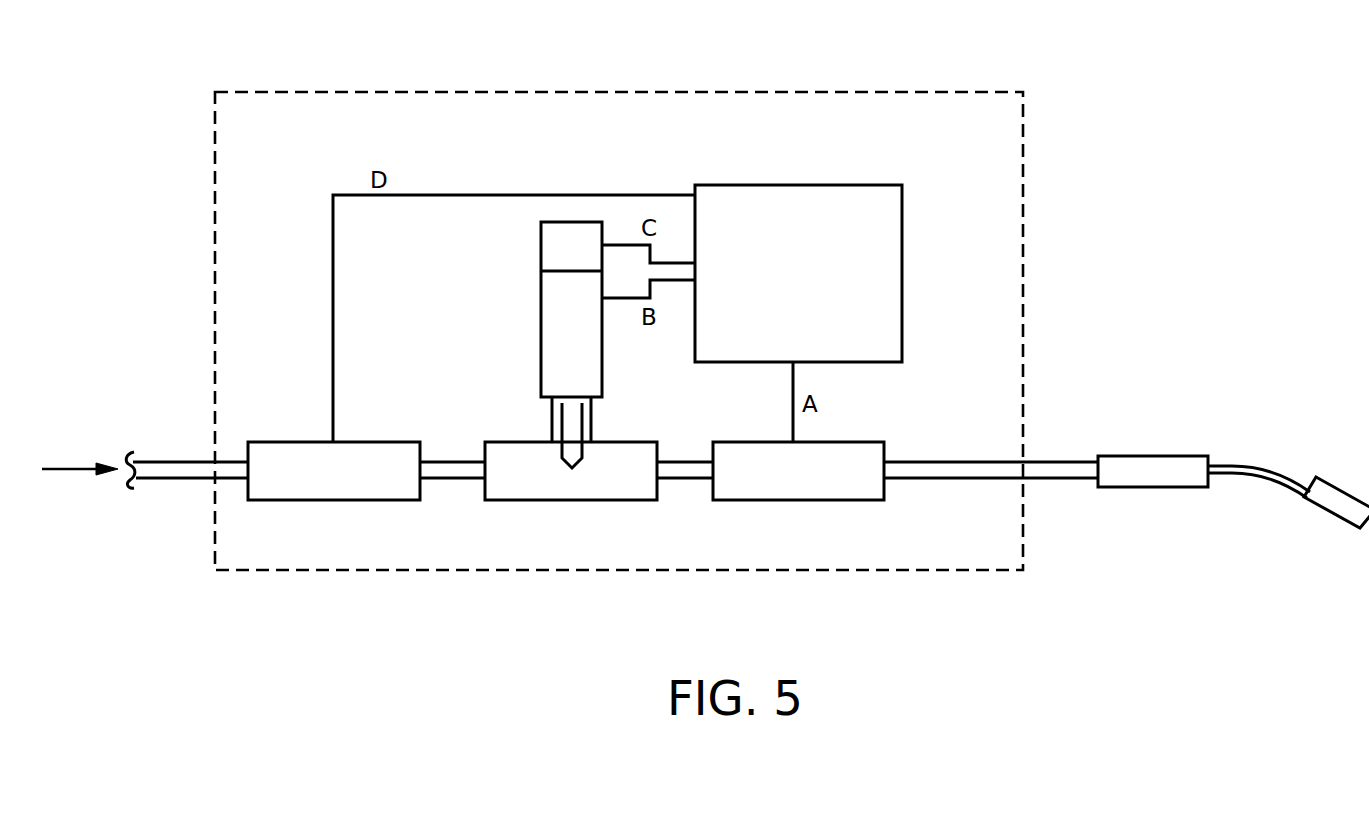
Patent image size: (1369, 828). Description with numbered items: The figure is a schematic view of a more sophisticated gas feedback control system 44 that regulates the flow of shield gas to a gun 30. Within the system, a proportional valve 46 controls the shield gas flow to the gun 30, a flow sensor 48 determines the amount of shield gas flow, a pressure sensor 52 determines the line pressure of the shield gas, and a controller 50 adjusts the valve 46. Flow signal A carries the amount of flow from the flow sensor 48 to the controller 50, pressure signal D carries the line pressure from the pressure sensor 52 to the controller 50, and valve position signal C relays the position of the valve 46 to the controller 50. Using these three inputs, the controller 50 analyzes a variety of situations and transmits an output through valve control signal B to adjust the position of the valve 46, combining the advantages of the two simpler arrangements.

The gun 30 is at (1173, 456).
The feedback control system 44 is at (962, 118).
The proportional valve 46 is at (592, 413).
The flow sensor 48 is at (877, 440).
The controller 50 is at (903, 313).
The pressure sensor 52 is at (350, 440).